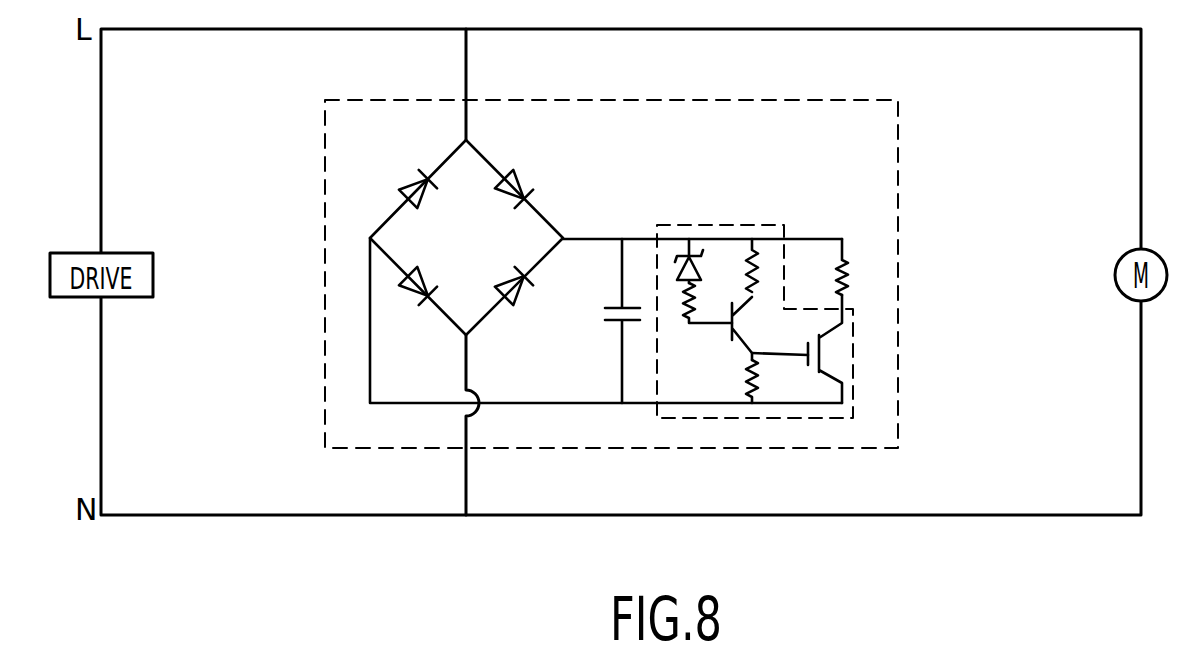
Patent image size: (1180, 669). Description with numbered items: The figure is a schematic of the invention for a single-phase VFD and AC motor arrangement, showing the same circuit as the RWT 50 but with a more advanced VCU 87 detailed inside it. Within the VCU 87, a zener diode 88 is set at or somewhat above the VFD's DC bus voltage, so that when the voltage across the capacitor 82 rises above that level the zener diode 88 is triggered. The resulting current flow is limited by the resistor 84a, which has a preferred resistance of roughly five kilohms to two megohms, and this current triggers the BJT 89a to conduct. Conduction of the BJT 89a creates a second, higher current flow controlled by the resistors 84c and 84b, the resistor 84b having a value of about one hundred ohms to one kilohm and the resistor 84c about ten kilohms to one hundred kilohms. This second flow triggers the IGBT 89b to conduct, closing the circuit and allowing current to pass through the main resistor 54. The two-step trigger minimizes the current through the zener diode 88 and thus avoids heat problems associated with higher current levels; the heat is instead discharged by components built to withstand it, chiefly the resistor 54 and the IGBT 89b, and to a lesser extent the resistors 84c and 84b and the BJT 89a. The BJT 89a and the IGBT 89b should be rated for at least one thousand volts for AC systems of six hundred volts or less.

The RWT 50 is at (898, 150).
The resistor 54 is at (842, 270).
The capacitor 82 is at (605, 316).
The resistor 84a is at (688, 298).
The resistor 84b is at (758, 373).
The resistor 84c is at (753, 260).
The VCU 87 is at (670, 222).
The zener diode 88 is at (695, 254).
The BJT 89a is at (730, 333).
The IGBT 89b is at (825, 353).